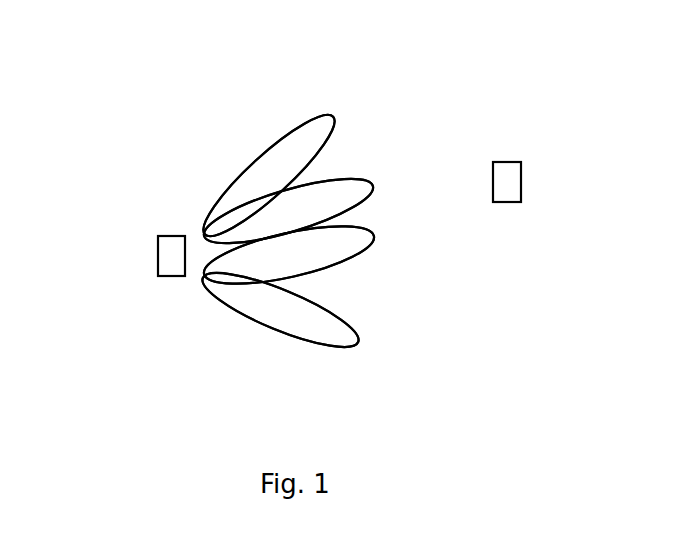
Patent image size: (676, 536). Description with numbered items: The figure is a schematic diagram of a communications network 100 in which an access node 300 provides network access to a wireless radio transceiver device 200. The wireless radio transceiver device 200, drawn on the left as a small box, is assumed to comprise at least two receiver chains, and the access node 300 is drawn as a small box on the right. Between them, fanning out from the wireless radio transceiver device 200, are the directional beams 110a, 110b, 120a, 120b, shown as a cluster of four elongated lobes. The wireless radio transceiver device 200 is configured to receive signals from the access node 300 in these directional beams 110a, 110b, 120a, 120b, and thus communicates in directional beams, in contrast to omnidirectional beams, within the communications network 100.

The communications network 100 is at (429, 99).
The directional beam 110a is at (249, 164).
The directional beam 110b is at (368, 181).
The directional beam 120a is at (368, 244).
The directional beam 120b is at (258, 323).
The wireless radio transceiver device 200 is at (165, 252).
The access node 300 is at (517, 178).